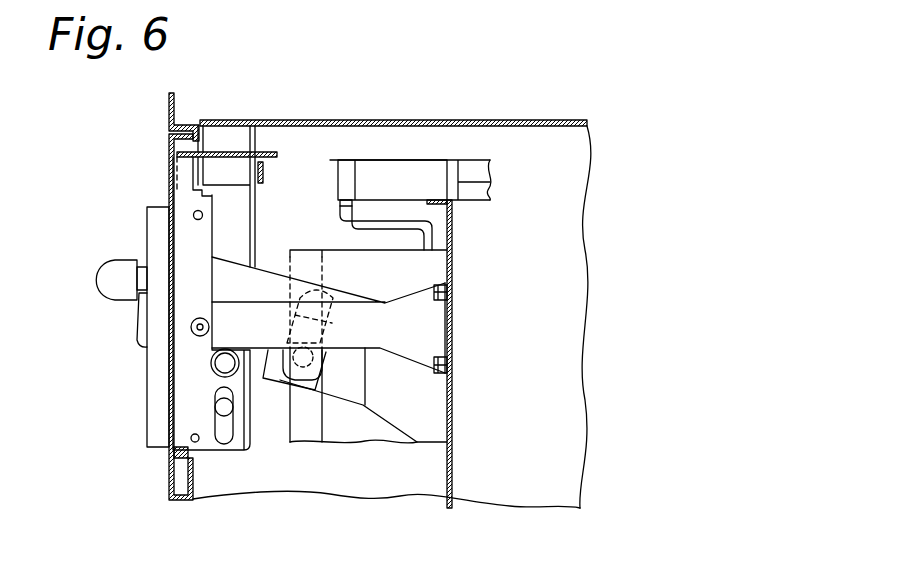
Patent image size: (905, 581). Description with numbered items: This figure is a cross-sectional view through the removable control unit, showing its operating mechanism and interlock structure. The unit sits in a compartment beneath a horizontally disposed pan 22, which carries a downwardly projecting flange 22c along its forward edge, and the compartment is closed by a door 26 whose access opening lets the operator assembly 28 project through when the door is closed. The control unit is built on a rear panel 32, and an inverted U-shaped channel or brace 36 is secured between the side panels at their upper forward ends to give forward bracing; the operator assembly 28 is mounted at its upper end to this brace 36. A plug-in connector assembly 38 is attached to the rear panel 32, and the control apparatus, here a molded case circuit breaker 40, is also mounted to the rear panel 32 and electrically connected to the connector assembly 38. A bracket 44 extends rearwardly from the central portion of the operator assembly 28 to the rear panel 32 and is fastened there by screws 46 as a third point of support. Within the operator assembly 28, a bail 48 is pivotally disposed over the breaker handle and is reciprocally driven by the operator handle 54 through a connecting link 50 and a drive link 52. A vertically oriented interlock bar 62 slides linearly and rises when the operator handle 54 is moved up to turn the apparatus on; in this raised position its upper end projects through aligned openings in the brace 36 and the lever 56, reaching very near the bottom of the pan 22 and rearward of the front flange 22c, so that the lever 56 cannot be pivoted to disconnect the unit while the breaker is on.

The pan 22 is at (465, 120).
The downwardly projecting flange 22c is at (191, 128).
The door 26 is at (167, 108).
The operator assembly 28 is at (88, 268).
The rear panel 32 is at (452, 475).
The inverted U-shaped channel (brace) 36 is at (264, 177).
The plug-in connector assembly 38 is at (495, 185).
The molded case circuit breaker 40 is at (323, 247).
The bracket 44 is at (427, 331).
The screws 46 is at (447, 305).
The bail 48 is at (280, 381).
The connecting link 50 is at (318, 363).
The drive link 52 is at (262, 278).
The operator handle 54 is at (98, 290).
The lever 56 is at (263, 152).
The interlock bar 62 is at (236, 130).